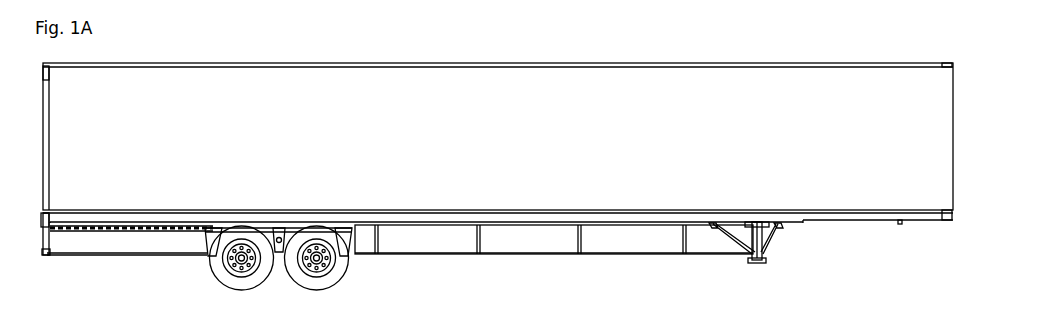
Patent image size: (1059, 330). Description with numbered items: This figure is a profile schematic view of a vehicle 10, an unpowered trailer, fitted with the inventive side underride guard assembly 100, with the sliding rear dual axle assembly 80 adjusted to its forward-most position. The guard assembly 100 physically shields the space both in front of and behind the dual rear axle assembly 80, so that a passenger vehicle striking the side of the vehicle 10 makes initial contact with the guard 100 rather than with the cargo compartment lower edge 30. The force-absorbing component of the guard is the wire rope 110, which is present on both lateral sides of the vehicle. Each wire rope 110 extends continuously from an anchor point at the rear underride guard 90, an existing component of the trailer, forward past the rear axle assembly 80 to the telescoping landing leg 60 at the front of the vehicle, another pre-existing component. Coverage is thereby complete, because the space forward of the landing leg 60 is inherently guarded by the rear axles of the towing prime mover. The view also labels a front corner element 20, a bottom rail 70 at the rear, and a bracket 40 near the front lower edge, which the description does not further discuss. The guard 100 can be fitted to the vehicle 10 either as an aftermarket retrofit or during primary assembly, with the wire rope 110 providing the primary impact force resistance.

The vehicle 10 is at (500, 51).
The front corner / nose 20 is at (946, 221).
The cargo compartment lower edge 30 is at (865, 222).
The mounting bracket 40 is at (900, 226).
The landing leg 60 is at (757, 263).
The rear bottom rail 70 is at (157, 231).
The sliding rear dual axle assembly 80 is at (275, 271).
The rear underride guard 90 is at (52, 257).
The side underride guard assembly 100 is at (558, 259).
The wire rope 110 is at (80, 256).